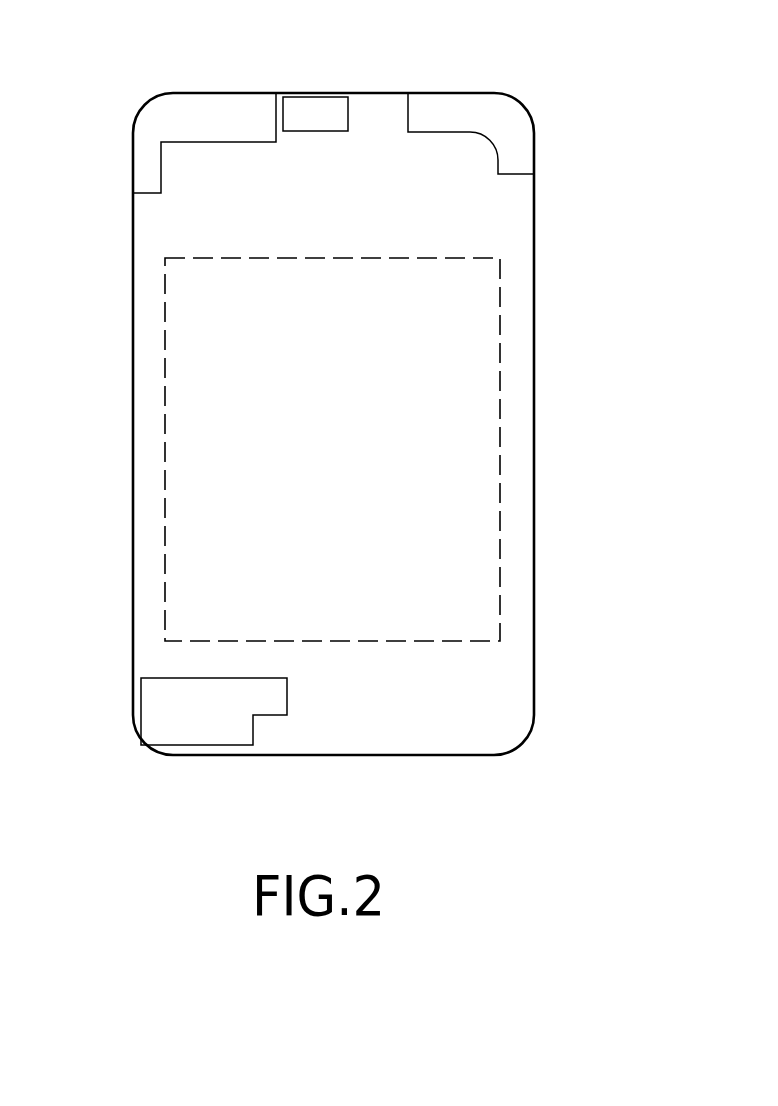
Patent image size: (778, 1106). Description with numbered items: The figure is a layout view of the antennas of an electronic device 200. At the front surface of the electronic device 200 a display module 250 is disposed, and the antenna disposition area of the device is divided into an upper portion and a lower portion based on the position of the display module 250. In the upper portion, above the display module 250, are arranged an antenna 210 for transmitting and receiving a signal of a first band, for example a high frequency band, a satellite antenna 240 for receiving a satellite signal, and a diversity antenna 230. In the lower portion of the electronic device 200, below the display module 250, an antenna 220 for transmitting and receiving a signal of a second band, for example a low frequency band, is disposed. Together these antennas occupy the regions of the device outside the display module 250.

The electronic device 200 is at (583, 125).
The antenna 210 is at (183, 128).
The antenna 220 is at (154, 715).
The diversity antenna 230 is at (502, 113).
The satellite antenna 240 is at (308, 112).
The display module 250 is at (450, 402).